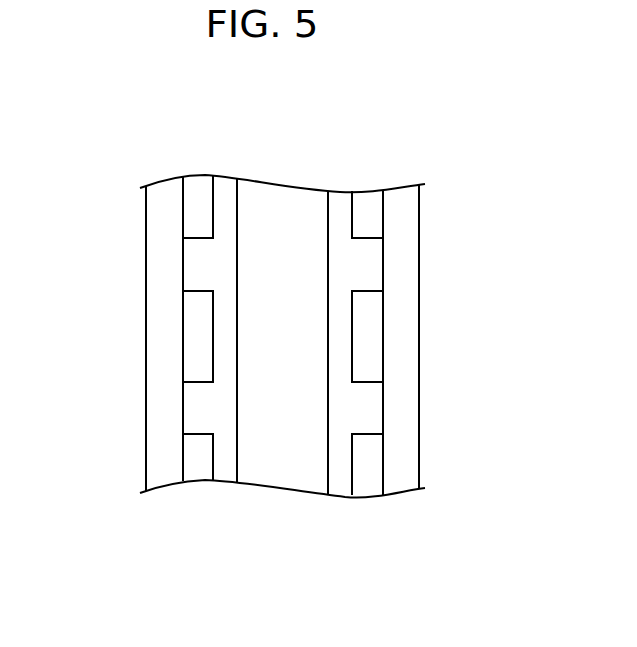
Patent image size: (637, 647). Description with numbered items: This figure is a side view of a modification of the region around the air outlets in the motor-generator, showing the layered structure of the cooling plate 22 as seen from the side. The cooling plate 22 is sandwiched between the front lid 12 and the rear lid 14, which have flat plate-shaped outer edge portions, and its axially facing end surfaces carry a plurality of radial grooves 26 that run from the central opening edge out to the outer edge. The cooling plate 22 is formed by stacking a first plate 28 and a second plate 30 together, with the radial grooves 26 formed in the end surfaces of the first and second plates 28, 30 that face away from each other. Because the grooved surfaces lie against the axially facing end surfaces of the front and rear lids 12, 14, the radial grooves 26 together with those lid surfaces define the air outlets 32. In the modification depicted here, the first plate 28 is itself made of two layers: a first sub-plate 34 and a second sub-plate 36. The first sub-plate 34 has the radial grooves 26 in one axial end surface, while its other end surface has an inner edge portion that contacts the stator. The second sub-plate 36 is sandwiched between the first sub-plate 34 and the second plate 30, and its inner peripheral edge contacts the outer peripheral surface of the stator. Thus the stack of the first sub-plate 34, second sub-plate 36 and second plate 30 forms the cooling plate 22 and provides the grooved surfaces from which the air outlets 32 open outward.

The front lid 12 is at (153, 257).
The rear lid 14 is at (410, 273).
The cooling plate 22 is at (270, 369).
The radial grooves 26 is at (212, 200).
The first plate 28 is at (255, 383).
The second plate 30 is at (340, 485).
The air outlets 32 is at (186, 205).
The first sub-plate 34 is at (223, 473).
The second sub-plate 36 is at (282, 362).